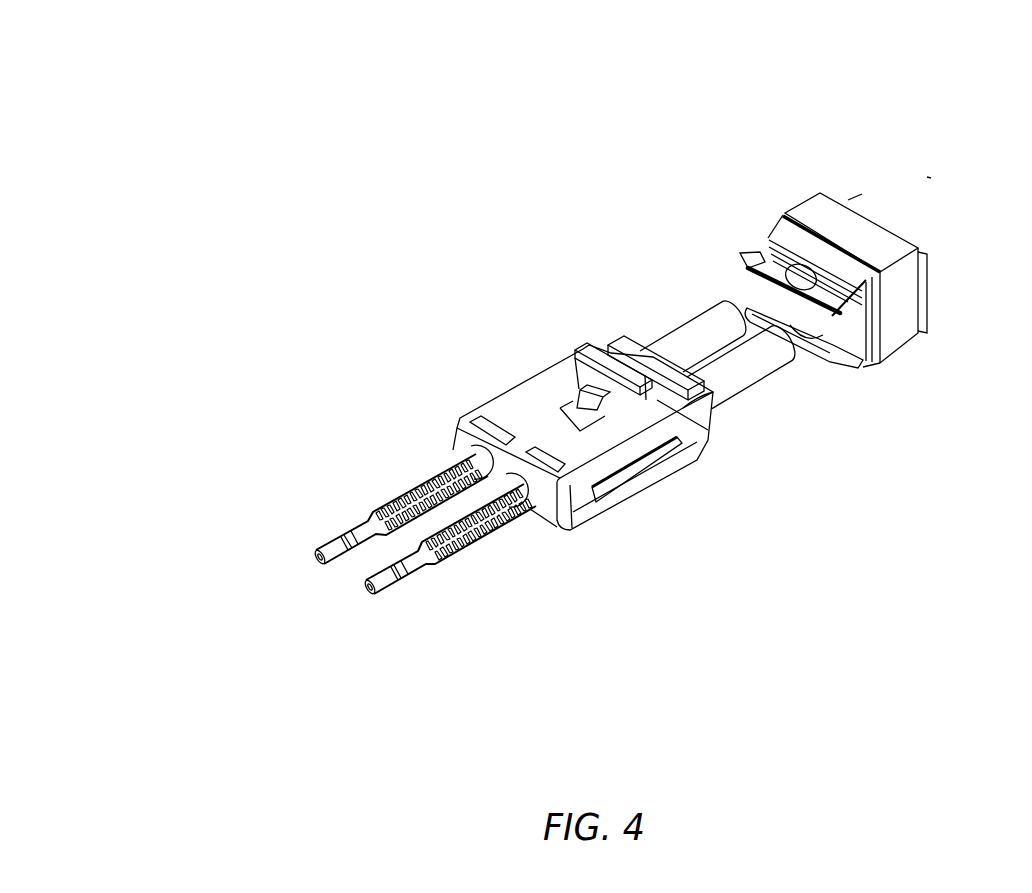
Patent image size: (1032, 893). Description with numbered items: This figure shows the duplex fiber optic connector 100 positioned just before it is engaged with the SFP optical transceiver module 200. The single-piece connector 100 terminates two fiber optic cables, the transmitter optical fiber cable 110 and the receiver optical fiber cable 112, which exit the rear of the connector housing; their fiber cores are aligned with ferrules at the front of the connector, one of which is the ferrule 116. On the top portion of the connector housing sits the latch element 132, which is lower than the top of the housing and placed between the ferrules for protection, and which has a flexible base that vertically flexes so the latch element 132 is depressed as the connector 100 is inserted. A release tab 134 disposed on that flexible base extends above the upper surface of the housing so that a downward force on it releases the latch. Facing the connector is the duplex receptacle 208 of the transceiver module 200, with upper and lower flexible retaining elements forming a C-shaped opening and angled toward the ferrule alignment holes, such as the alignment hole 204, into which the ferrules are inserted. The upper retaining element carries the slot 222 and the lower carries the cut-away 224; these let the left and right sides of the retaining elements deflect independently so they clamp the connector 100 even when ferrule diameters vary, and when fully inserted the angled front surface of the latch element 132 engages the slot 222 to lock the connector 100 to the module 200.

The duplex fiber optic connector 100 is at (400, 358).
The transmitter optical fiber cable 110 is at (312, 533).
The receiver optical fiber cable 112 is at (387, 600).
The ferrule 116 is at (700, 330).
The latch element 132 is at (650, 367).
The release tab 134 is at (592, 380).
The SFP optical transceiver module 200 is at (788, 168).
The ferrule alignment hole 204 is at (860, 312).
The duplex receptacle 208 is at (850, 225).
The slot 222 is at (775, 265).
The cut-away 224 is at (805, 333).